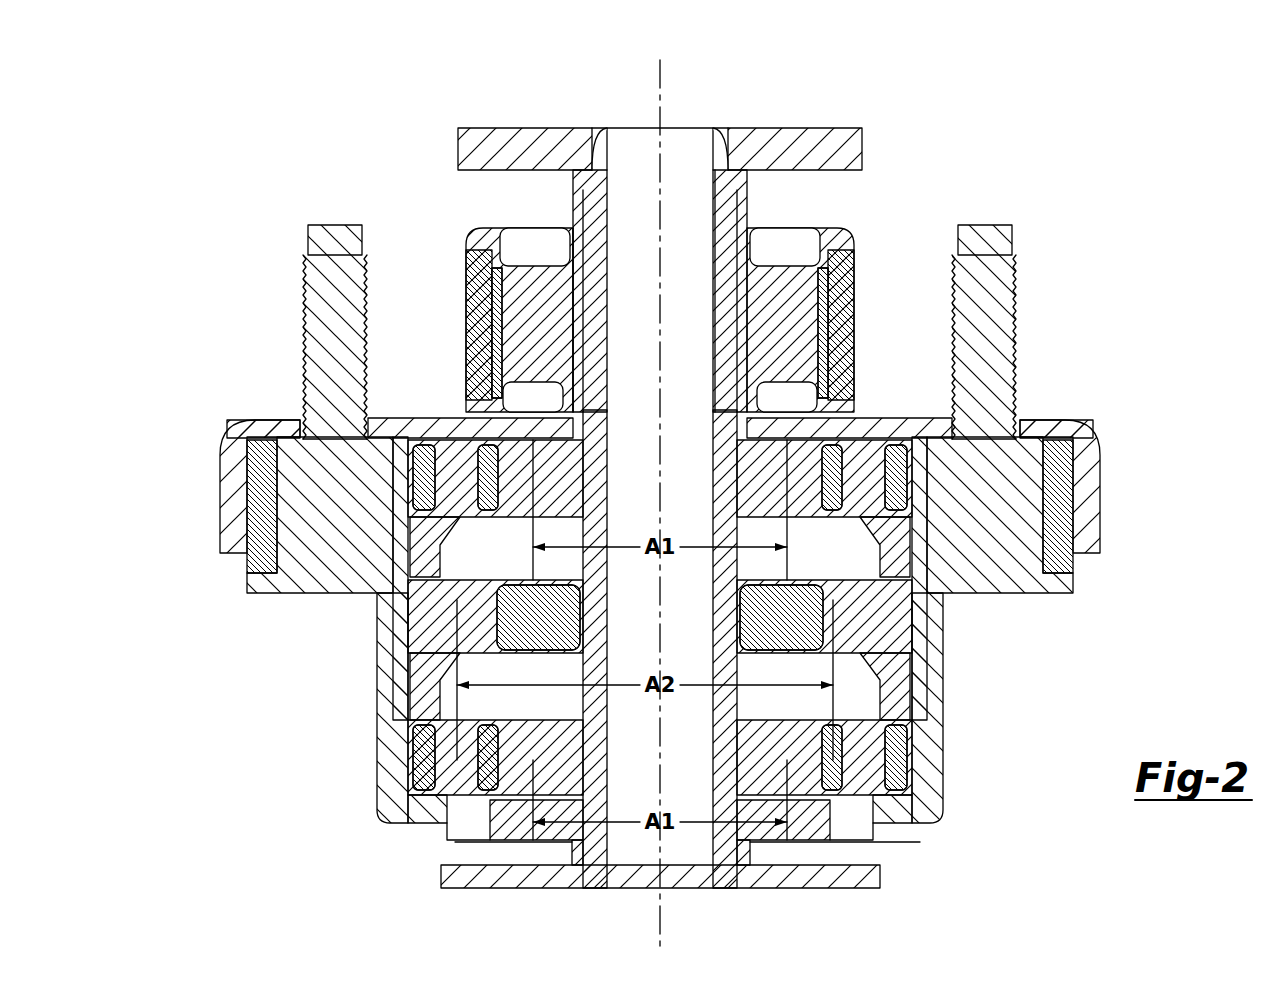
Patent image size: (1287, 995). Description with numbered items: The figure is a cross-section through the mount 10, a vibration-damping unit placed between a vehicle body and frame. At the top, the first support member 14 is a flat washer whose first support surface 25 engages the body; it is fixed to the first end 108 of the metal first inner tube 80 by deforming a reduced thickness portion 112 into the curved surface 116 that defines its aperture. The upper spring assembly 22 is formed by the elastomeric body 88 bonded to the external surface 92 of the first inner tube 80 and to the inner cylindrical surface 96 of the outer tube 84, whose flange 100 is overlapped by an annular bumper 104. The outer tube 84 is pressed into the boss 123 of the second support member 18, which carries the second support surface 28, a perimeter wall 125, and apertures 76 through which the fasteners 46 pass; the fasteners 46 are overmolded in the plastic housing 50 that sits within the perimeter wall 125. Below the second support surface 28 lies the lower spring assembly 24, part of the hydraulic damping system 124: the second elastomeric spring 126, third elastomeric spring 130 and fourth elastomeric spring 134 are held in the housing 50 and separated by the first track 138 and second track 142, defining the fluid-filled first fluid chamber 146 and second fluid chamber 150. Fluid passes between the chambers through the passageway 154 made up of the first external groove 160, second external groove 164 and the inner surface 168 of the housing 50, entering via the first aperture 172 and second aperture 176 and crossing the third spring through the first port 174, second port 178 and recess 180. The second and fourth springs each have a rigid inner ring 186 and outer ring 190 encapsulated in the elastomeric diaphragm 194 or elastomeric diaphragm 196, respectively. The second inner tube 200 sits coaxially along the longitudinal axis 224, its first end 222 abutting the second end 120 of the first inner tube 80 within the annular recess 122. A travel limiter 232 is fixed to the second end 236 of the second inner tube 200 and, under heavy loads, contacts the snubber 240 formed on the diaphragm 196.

The mount 10 is at (843, 110).
The first support member 14 is at (704, 110).
The second support member 18 is at (989, 603).
The upper spring assembly 22 is at (851, 290).
The lower spring assembly 24 is at (954, 793).
The first support surface 25 is at (507, 128).
The second support surface 28 is at (430, 420).
The fasteners 46 is at (305, 268).
The plastic housing 50 is at (390, 782).
The apertures 76 is at (308, 430).
The first inner tube 80 is at (585, 190).
The outer tube 84 is at (487, 288).
The elastomeric body 88 is at (800, 275).
The external surface 92 is at (598, 322).
The inner cylindrical surface 96 is at (482, 305).
The flange 100 is at (856, 262).
The annular bumper 104 is at (850, 234).
The first end 108 is at (722, 175).
The reduced thickness portion 112 is at (613, 140).
The curved surface 116 is at (705, 150).
The second end 120 is at (756, 417).
The annular recess 122 is at (712, 405).
The boss 123 is at (845, 334).
The hydraulic damping system 124 is at (940, 641).
The perimeter wall 125 is at (1100, 482).
The second elastomeric spring 126 is at (500, 425).
The third elastomeric spring 130 is at (445, 636).
The fourth elastomeric spring 134 is at (802, 802).
The first track 138 is at (405, 565).
The second track 142 is at (437, 712).
The first fluid chamber 146 is at (495, 612).
The second fluid chamber 150 is at (518, 688).
The passageway 154 is at (895, 590).
The first external groove 160 is at (930, 530).
The second external groove 164 is at (902, 712).
The inner surface 168 is at (460, 515).
The first aperture 172 is at (407, 570).
The first port 174 is at (895, 565).
The second aperture 176 is at (428, 697).
The second port 178 is at (900, 672).
The recess 180 is at (900, 605).
The inner ring 186 is at (533, 445).
The outer ring 190 is at (425, 468).
The elastomeric diaphragm 194 is at (806, 500).
The elastomeric diaphragm 196 is at (802, 787).
The second inner tube 200 is at (720, 866).
The first end 222 is at (596, 440).
The longitudinal axis 224 is at (660, 942).
The travel limiter 232 is at (460, 882).
The second end 236 is at (594, 888).
The snubber 240 is at (855, 830).